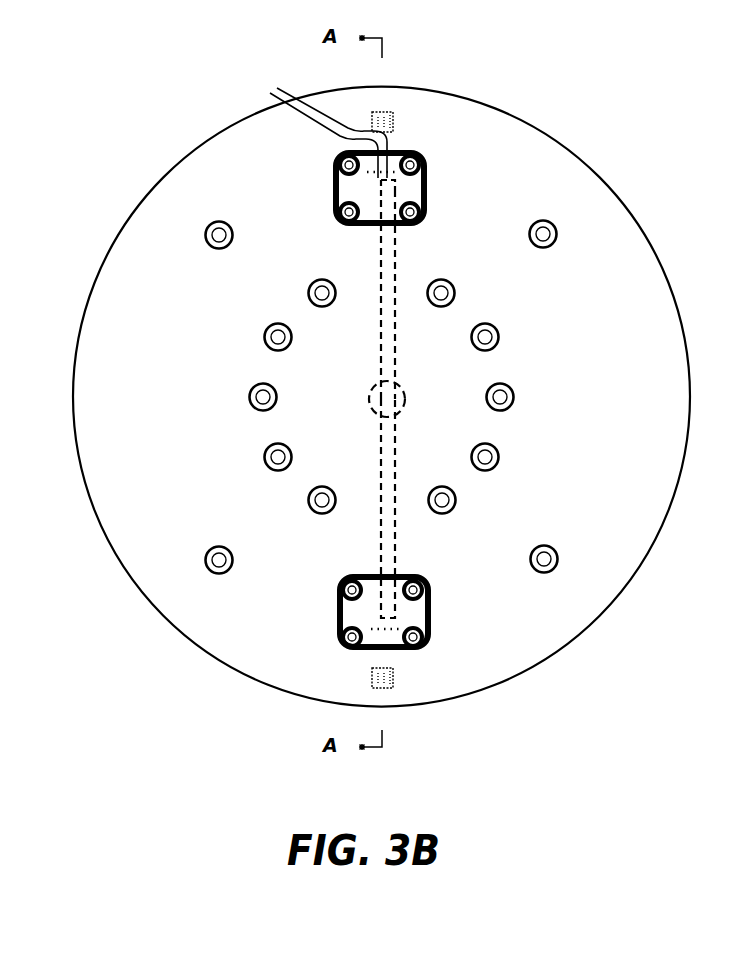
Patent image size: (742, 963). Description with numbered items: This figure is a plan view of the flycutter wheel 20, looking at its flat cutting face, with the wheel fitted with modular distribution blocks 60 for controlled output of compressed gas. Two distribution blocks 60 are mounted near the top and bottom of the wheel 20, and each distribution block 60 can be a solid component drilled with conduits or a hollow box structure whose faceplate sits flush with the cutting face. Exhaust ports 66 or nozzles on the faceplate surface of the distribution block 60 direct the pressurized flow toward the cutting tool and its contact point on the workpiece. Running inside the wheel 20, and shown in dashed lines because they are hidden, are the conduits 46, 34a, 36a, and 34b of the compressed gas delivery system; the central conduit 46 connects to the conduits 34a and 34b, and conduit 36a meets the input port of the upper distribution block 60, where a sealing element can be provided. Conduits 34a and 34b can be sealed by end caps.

The flycutter wheel 20 is at (620, 596).
The modular distribution block 60 is at (427, 183).
The exhaust port 66 is at (316, 123).
The conduit 36a is at (382, 192).
The conduit 34a is at (397, 342).
The conduit 34b is at (381, 458).
The conduit 46 is at (367, 393).